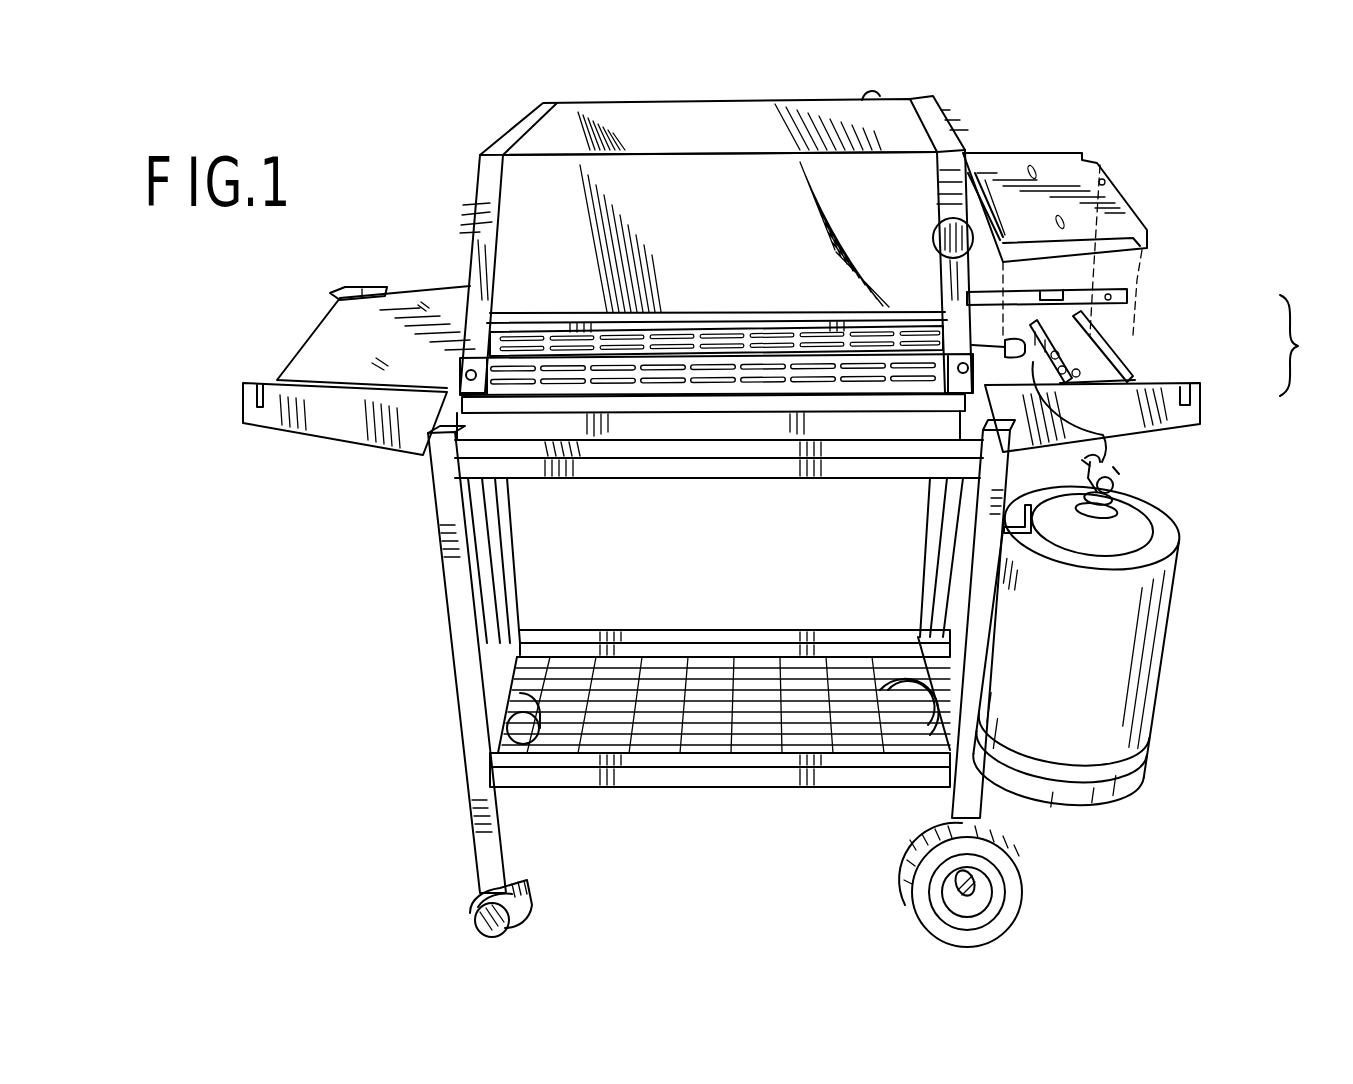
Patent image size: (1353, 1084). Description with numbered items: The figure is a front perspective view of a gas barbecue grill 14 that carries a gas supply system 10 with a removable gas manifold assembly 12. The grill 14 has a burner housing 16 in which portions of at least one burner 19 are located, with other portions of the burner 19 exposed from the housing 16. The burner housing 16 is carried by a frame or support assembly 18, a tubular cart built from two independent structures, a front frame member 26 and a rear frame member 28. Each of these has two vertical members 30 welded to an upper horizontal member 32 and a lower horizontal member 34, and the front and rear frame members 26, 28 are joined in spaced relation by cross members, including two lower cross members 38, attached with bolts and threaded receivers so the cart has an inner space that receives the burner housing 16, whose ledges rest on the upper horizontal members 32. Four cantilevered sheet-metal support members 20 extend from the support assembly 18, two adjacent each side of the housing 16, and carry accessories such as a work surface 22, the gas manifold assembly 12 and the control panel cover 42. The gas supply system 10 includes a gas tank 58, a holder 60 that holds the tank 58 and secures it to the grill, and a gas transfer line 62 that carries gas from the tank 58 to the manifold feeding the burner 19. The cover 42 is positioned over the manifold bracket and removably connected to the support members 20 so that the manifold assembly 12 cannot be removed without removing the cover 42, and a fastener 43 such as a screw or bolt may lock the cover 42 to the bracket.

The gas supply system 10 is at (1308, 345).
The removable gas manifold assembly 12 is at (1100, 346).
The gas barbecue grill 14 is at (390, 203).
The burner housing 16 is at (881, 113).
The frame or support assembly 18 is at (476, 853).
The burner 19 is at (1112, 437).
The support members 20 is at (335, 445).
The work surface 22 is at (335, 340).
The front frame member 26 is at (458, 703).
The rear frame member 28 is at (509, 542).
The vertical members 30 is at (443, 566).
The upper horizontal member 32 is at (705, 480).
The lower horizontal member 34 is at (712, 630).
The lower cross members 38 is at (487, 650).
The cover 42 is at (1028, 157).
The fastener 43 is at (1138, 380).
The gas container or tank 58 is at (1172, 612).
The holder 60 is at (1015, 537).
The gas transfer line 62 is at (1123, 458).